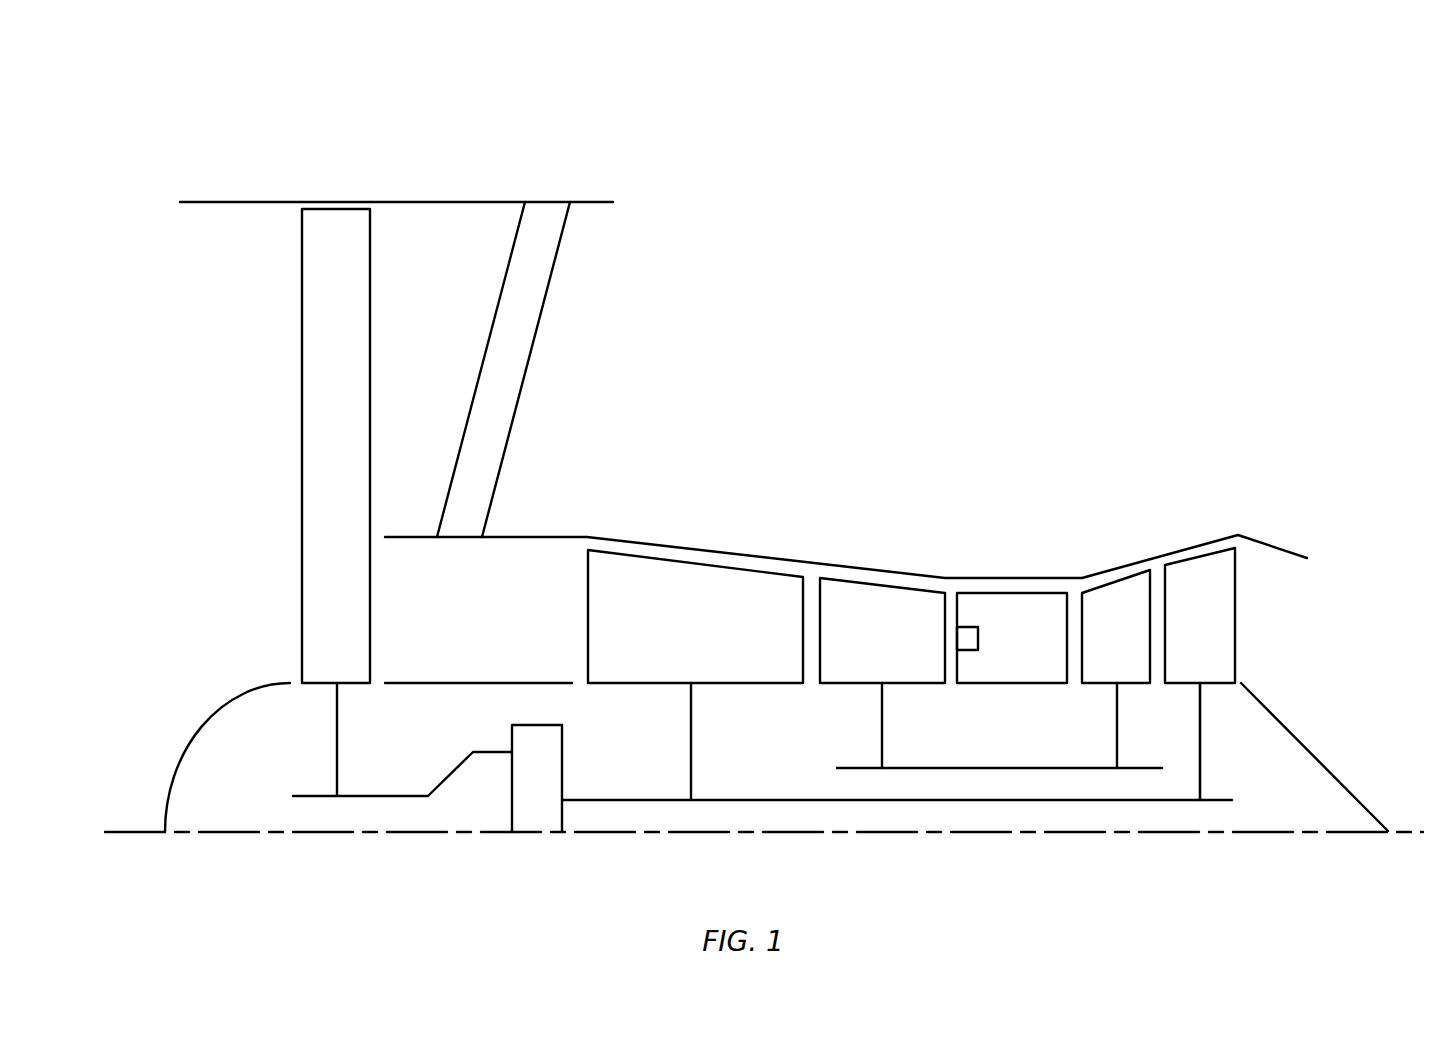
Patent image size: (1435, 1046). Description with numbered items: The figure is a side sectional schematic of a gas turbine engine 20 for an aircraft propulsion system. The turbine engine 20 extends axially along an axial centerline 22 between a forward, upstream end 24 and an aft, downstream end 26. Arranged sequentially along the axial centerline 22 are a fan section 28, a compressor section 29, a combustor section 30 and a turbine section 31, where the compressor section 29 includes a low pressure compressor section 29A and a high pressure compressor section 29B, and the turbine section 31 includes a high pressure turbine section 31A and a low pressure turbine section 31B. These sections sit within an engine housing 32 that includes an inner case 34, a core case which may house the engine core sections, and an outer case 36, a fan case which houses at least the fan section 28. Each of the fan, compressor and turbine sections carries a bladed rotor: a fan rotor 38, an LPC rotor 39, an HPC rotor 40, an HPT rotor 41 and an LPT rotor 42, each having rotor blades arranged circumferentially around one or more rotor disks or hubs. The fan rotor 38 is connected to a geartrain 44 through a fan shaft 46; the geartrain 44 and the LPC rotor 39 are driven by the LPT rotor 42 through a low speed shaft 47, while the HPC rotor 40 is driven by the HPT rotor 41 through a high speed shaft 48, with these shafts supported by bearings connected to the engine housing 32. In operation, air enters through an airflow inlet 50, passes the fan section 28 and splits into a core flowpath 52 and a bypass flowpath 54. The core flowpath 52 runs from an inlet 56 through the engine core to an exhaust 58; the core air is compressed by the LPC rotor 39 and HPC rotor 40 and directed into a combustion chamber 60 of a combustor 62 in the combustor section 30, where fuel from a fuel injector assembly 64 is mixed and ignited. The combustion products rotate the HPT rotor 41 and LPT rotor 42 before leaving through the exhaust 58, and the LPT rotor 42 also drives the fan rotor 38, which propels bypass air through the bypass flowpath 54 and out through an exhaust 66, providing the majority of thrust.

The gas turbine engine 20 is at (126, 118).
The axial centerline 22 is at (110, 838).
The forward, upstream end 24 is at (181, 202).
The aft, downstream end 26 is at (1392, 830).
The fan section 28 is at (408, 183).
The compressor section 29 is at (588, 383).
The low pressure compressor section 29A is at (588, 471).
The high pressure compressor section 29B is at (945, 471).
The combustor section 30 is at (1067, 471).
The turbine section 31 is at (1235, 383).
The high pressure turbine section 31A is at (1150, 471).
The low pressure turbine section 31B is at (1165, 471).
The engine housing 32 is at (722, 199).
The inner case 34 is at (545, 511).
The outer case 36 is at (505, 189).
The fan rotor 38 is at (337, 740).
The LPC rotor 39 is at (692, 755).
The HPC rotor 40 is at (881, 713).
The HPT rotor 41 is at (1118, 715).
The LPT rotor 42 is at (1201, 742).
The geartrain 44 is at (553, 795).
The fan shaft 46 is at (380, 797).
The low speed shaft 47 is at (1143, 803).
The high speed shaft 48 is at (1010, 768).
The airflow inlet 50 is at (174, 395).
The core flowpath 52 is at (474, 635).
The bypass flowpath 54 is at (446, 362).
The inlet 56 is at (395, 614).
The exhaust 58 is at (1298, 641).
The combustion chamber 60 is at (1036, 654).
The combustor 62 is at (1052, 593).
The fuel injector assembly 64 is at (971, 627).
The exhaust 66 is at (603, 281).